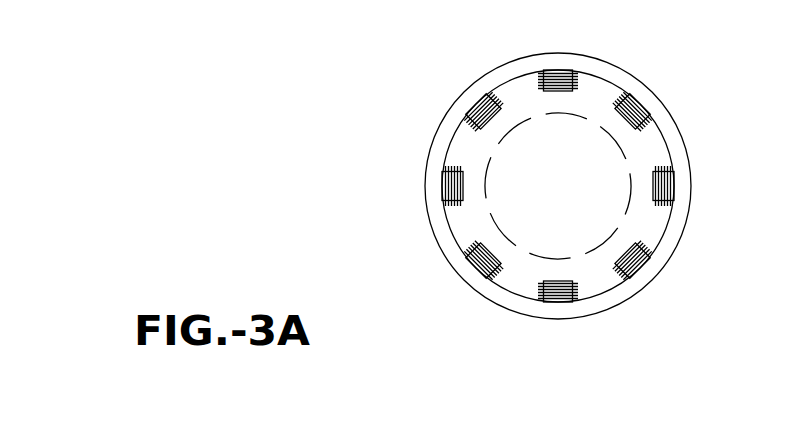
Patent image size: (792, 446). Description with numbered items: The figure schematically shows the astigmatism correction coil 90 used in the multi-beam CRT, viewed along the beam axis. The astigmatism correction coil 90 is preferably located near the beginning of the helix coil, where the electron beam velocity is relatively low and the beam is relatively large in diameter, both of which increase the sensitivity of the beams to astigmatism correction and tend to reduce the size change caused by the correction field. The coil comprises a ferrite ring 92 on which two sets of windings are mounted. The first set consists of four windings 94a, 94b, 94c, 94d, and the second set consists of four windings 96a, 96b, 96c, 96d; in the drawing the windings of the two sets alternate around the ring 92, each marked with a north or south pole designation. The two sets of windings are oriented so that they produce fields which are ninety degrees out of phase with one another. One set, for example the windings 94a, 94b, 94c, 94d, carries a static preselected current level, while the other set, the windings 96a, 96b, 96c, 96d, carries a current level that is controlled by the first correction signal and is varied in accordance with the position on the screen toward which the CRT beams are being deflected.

The astigmatism correction coil 90 is at (704, 98).
The stator ring 92 is at (686, 150).
The winding 94a is at (579, 52).
The winding 94b is at (682, 197).
The winding 94c is at (572, 307).
The winding 94d is at (430, 176).
The winding 96a is at (633, 88).
The winding 96b is at (660, 258).
The winding 96c is at (474, 282).
The winding 96d is at (481, 70).